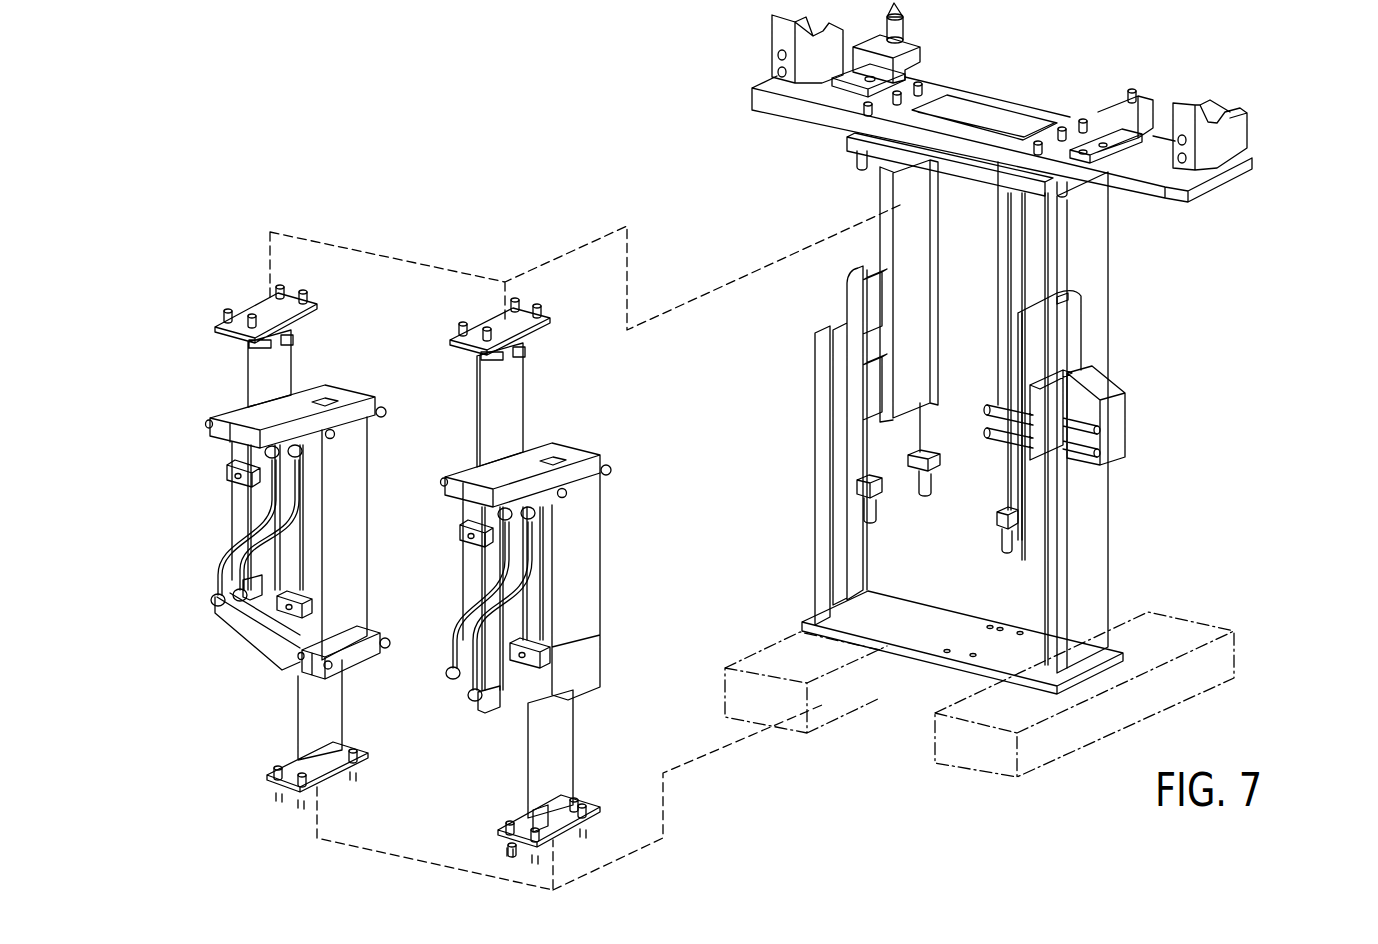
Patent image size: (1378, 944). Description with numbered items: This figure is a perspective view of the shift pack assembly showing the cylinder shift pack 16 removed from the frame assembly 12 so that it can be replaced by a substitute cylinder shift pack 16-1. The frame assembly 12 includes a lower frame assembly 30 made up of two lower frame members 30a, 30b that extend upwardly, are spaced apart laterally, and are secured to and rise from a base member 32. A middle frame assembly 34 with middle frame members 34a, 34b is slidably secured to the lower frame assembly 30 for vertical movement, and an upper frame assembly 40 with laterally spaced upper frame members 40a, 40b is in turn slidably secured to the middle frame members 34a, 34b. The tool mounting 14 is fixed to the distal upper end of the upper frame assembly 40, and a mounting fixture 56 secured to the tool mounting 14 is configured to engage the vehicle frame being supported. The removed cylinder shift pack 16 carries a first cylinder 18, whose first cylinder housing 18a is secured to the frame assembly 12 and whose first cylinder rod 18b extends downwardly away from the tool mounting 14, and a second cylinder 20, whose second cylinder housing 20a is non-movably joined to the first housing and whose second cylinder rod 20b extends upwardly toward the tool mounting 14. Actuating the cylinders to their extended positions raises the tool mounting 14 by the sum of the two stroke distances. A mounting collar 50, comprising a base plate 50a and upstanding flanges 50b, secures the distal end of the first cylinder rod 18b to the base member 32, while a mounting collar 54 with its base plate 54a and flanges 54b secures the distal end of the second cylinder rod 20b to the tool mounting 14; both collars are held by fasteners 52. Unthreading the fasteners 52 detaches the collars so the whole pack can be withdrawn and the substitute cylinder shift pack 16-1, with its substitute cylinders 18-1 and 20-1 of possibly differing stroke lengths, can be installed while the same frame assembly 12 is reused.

The frame assembly 12 is at (1052, 373).
The tool mounting 14 is at (968, 183).
The cylinder shift pack 16 is at (556, 572).
The substitute cylinder shift pack 16-1 is at (251, 555).
The first cylinder 18 is at (558, 637).
The substitute first cylinder 18-1 is at (318, 708).
The first cylinder housing 18a is at (582, 578).
The first cylinder rod 18b is at (541, 742).
The second cylinder 20 is at (506, 528).
The substitute second cylinder 20-1 is at (258, 357).
The second cylinder housing 20a is at (498, 633).
The second cylinder rod 20b is at (492, 408).
The lower frame assembly 30 is at (979, 458).
The lower frame member 30a is at (820, 548).
The lower frame member 30b is at (1102, 615).
The base member 32 is at (936, 660).
The middle frame assembly 34 is at (961, 428).
The middle frame member 34a is at (862, 344).
The middle frame member 34b is at (1073, 334).
The upper frame assembly 40 is at (984, 271).
The upper frame member 40a is at (918, 283).
The upper frame member 40b is at (1008, 193).
The mounting collar 50 is at (610, 806).
The base plate 50a is at (603, 812).
The upstanding flanges 50b is at (575, 814).
The fasteners 52 is at (515, 300).
The mounting collar 54 is at (510, 349).
The base plate 54a is at (550, 318).
The top plate bracket 54b is at (528, 352).
The mounting fixture 56 is at (1257, 124).